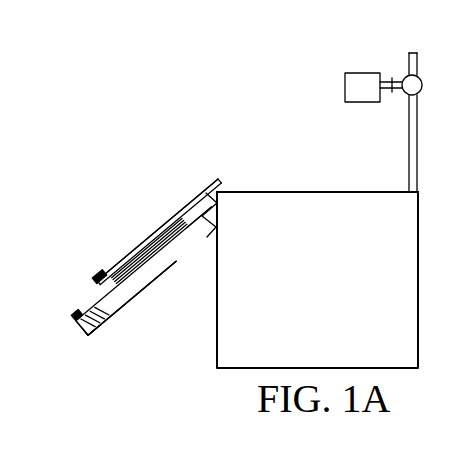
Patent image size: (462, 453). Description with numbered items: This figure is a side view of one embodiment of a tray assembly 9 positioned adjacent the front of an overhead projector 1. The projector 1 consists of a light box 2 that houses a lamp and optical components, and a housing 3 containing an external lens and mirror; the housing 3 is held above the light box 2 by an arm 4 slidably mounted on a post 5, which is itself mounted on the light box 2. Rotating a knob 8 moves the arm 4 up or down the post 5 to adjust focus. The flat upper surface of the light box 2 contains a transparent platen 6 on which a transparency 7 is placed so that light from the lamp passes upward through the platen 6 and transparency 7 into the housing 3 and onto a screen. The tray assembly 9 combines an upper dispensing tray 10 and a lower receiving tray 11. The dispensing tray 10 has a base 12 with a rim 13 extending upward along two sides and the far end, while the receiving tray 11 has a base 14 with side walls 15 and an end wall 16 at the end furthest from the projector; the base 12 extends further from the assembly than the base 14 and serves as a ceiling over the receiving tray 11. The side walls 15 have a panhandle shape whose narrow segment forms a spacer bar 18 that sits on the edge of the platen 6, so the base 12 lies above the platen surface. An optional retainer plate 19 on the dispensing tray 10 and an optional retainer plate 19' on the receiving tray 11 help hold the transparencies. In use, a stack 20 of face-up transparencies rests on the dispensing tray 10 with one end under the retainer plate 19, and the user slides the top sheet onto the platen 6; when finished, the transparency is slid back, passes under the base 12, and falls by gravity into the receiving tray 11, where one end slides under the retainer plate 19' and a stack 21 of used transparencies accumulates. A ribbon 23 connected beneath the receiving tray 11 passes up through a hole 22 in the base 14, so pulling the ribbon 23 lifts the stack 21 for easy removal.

The overhead projector 1 is at (305, 62).
The light box 2 is at (324, 295).
The housing 3 is at (357, 90).
The arm 4 is at (392, 80).
The post 5 is at (418, 150).
The platen 6 is at (247, 191).
The transparency 7 is at (331, 191).
The knob 8 is at (422, 84).
The tray assembly 9 is at (136, 107).
The dispensing tray 10 is at (189, 194).
The receiving tray 11 is at (203, 236).
The base 12 is at (194, 233).
The rim 13 is at (188, 198).
The base 14 is at (110, 315).
The side walls 15 is at (216, 225).
The end wall 16 is at (86, 336).
The spacer bar 18 is at (213, 187).
The retainer plate 19 is at (84, 259).
The retainer plate 19' is at (59, 294).
The stack 20 is at (155, 233).
The stack 21 is at (148, 282).
The hole 22 is at (110, 318).
The ribbon 23 is at (78, 318).